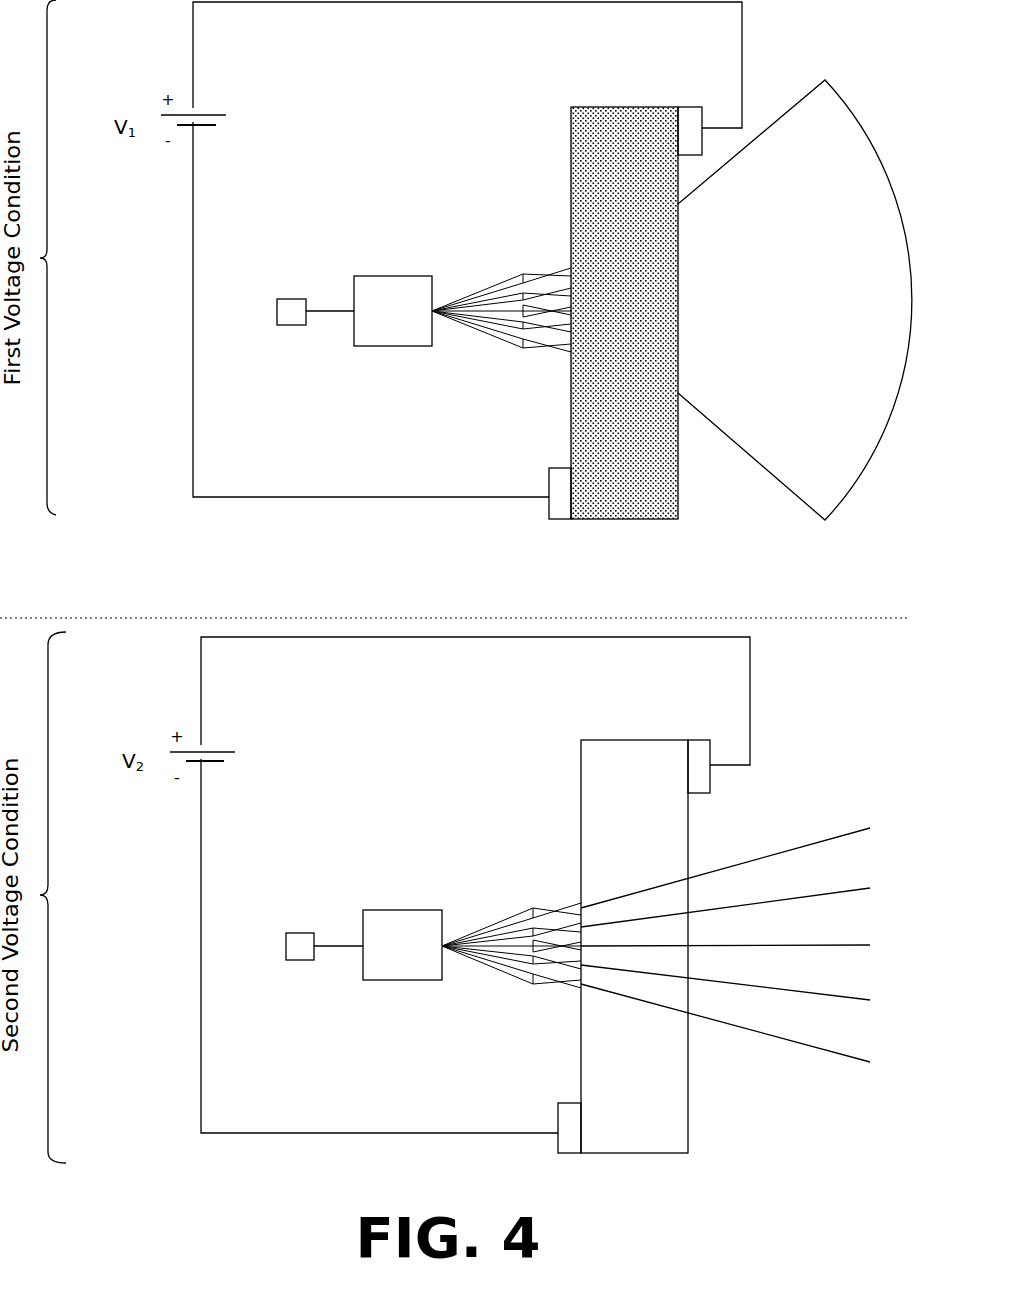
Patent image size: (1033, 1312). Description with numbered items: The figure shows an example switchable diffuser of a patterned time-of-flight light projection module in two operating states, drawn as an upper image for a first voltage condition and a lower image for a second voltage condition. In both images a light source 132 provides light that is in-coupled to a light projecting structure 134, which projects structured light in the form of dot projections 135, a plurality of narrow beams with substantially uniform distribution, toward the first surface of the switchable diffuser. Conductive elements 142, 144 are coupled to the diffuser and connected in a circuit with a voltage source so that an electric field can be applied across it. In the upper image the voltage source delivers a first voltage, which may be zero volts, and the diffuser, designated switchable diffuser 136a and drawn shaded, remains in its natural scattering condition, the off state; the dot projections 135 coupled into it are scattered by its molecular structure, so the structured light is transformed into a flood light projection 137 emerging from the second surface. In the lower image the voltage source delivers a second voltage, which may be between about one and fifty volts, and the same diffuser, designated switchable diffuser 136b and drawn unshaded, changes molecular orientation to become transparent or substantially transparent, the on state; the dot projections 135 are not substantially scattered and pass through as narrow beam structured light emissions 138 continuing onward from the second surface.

The light source 132 is at (290, 299).
The light projecting structure 134 is at (390, 276).
The dot projections 135 is at (499, 270).
The switchable diffuser in off state 136a is at (625, 107).
The switchable diffuser in on state 136b is at (633, 740).
The flood light projection 137 is at (850, 104).
The structured light emissions proceeding out of the switchable diffuser 138 is at (837, 814).
The conductive element 142 is at (560, 520).
The conductive element 144 is at (690, 107).